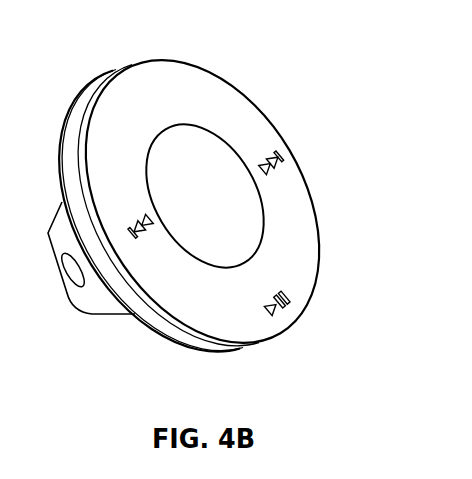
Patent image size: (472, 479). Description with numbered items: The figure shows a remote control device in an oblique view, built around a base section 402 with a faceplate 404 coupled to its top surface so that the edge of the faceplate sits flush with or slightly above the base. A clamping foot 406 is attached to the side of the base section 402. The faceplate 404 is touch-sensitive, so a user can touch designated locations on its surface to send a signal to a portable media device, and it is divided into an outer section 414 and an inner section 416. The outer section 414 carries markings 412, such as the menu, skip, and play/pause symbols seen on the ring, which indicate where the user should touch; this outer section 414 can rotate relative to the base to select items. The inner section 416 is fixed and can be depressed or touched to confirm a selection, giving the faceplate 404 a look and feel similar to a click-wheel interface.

The base section 402 is at (173, 341).
The faceplate 404 is at (221, 80).
The clamping feet 406 is at (120, 316).
The markings 412 is at (273, 331).
The outer section 414 is at (288, 222).
The inner section 416 is at (210, 245).